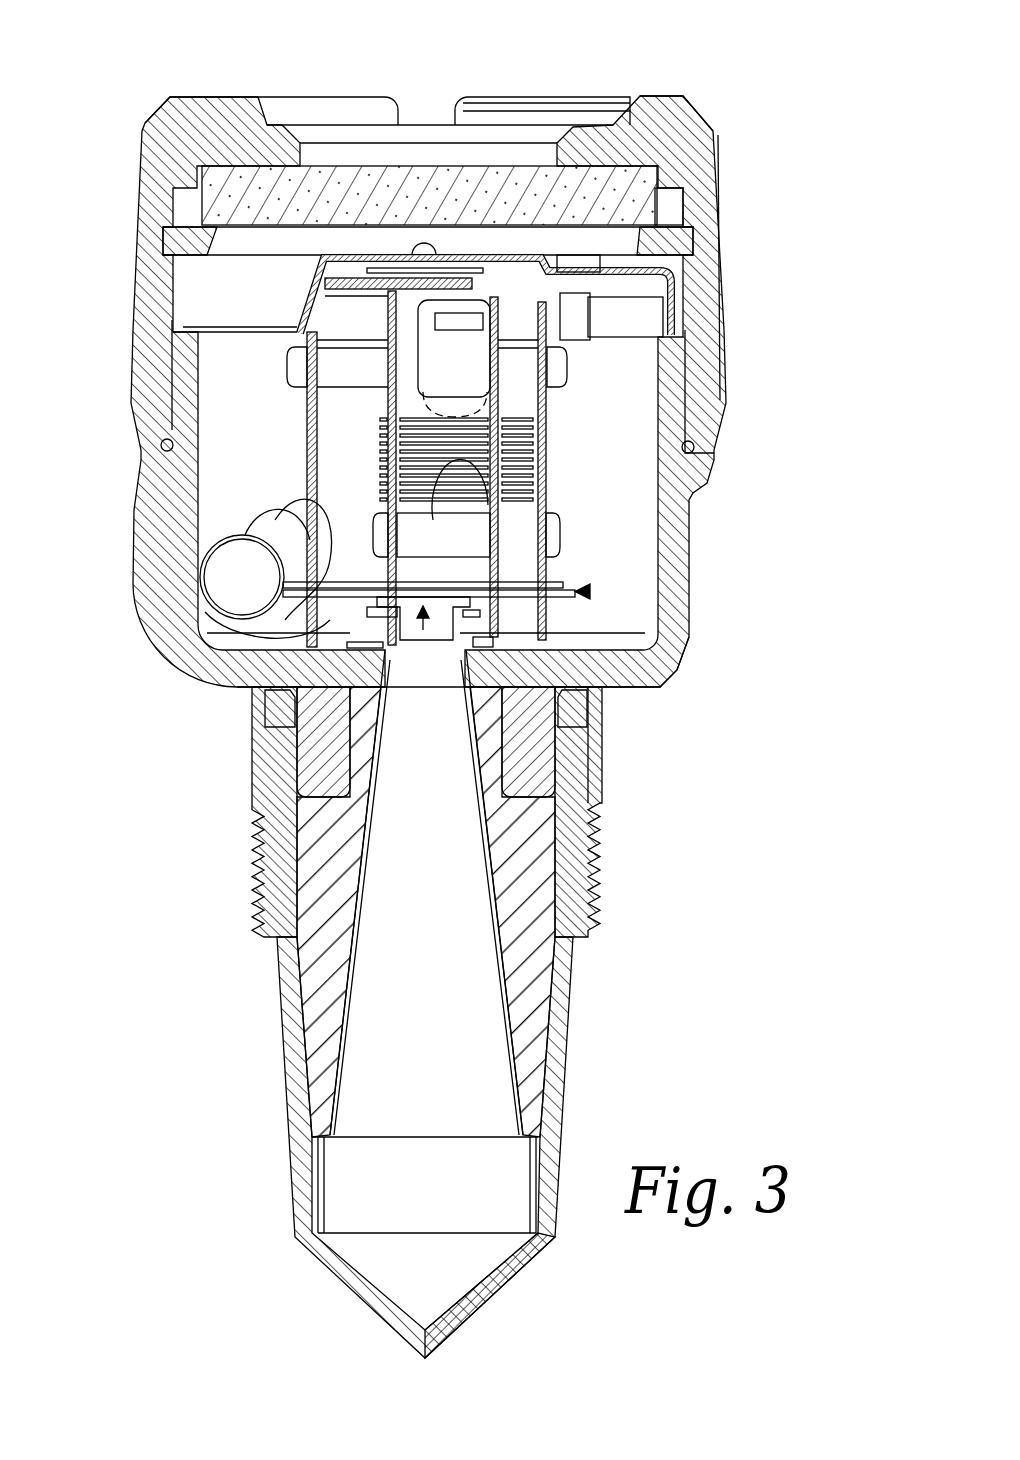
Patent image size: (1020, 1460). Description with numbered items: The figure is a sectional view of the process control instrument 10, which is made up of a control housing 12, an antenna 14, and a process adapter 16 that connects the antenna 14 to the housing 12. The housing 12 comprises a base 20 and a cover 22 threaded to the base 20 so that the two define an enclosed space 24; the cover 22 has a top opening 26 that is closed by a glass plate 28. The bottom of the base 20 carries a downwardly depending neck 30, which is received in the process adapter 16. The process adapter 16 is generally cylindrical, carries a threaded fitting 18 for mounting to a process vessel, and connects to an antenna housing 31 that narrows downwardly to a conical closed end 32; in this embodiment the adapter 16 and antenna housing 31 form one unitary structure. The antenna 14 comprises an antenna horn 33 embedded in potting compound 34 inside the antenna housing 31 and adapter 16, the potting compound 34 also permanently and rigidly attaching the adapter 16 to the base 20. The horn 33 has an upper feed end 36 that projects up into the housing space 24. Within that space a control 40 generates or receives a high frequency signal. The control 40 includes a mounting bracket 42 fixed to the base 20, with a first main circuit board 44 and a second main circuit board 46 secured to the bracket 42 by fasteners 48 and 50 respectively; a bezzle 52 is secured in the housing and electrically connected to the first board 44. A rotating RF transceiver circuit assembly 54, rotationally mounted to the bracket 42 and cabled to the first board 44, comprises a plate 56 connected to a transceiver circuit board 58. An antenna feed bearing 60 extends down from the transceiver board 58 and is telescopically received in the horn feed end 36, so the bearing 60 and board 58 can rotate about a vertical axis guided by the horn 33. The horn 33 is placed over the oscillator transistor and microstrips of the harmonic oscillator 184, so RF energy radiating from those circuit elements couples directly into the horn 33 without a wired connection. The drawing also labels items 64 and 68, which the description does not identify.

The process control instrument 10 is at (735, 152).
The control housing 12 is at (135, 630).
The antenna 14 is at (282, 1080).
The process adapter 16 is at (603, 782).
The threaded fitting 18 is at (257, 873).
The base 20 is at (673, 645).
The cover 22 is at (700, 283).
The enclosed space 24 is at (245, 481).
The top opening 26 is at (303, 151).
The glass plate 28 is at (514, 185).
The neck 30 is at (322, 748).
The antenna housing 31 is at (548, 1112).
The conical closed end 32 is at (497, 1290).
The antenna horn 33 is at (522, 1057).
The potting compound 34 is at (537, 970).
The upper feed end 36 is at (415, 645).
The control 40 is at (555, 485).
The mounting bracket 42 is at (503, 415).
The first main circuit board 44 is at (462, 442).
The second main circuit board 46 is at (308, 363).
The fastener 48 is at (548, 557).
The fastener 50 is at (358, 370).
The bezzle 52 is at (627, 265).
The rotating RF transceiver circuit assembly 54 is at (592, 591).
The plate 56 is at (543, 577).
The transceiver circuit board 58 is at (545, 599).
The antenna feed bearing 60 is at (460, 680).
The board support 64 is at (305, 427).
The gasket 68 is at (503, 603).
The harmonic oscillator 184 is at (430, 648).